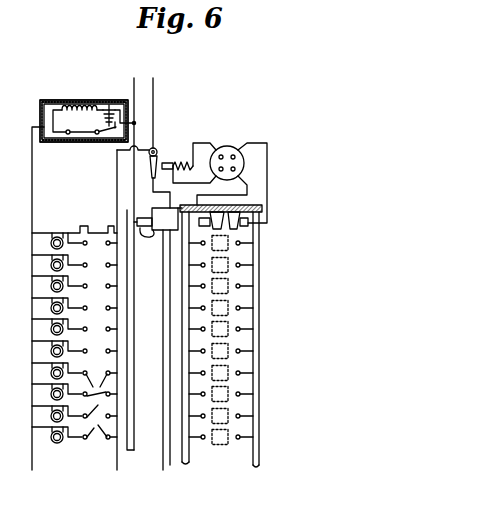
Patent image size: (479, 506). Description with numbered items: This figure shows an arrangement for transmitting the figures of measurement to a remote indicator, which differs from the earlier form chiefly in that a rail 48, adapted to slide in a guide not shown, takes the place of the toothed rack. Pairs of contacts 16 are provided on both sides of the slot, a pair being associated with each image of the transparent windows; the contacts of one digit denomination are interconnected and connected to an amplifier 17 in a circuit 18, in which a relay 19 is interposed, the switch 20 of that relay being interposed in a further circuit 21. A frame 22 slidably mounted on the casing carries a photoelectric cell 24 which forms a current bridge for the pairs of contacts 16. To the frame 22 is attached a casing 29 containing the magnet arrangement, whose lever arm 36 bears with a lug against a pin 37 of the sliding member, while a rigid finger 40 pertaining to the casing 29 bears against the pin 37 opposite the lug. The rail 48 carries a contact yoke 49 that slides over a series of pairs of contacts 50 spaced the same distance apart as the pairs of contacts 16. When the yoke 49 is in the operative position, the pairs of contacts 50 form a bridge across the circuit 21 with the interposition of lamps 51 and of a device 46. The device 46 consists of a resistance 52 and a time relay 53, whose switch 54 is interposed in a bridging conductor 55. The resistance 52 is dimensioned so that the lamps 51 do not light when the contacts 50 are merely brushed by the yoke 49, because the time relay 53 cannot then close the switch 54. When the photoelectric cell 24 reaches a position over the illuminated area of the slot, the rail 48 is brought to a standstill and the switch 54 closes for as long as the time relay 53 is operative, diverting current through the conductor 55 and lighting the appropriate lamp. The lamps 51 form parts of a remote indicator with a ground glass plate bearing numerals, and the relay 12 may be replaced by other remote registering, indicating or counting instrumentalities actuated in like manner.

The relay 12 is at (64, 117).
The contacts 16 is at (201, 436).
The amplifier 17 is at (231, 152).
The circuit 18 is at (203, 143).
The relay 19 is at (183, 160).
The switch 20 is at (156, 148).
The circuit 21 is at (136, 97).
The frame 22 is at (259, 443).
The photoelectric cell 24 is at (233, 228).
The casing 29 is at (170, 230).
The lever arm 36 is at (143, 219).
The pin 37 is at (137, 223).
The rigid finger 40 is at (147, 238).
The device 46 is at (40, 103).
The rail 48 is at (131, 452).
The contact yoke 49 is at (80, 227).
The pairs of contacts 50 is at (99, 405).
The lamps 51 is at (53, 352).
The resistance 52 is at (68, 106).
The time relay 53 is at (109, 105).
The switch 54 is at (106, 135).
The bridging conductor 55 is at (68, 135).